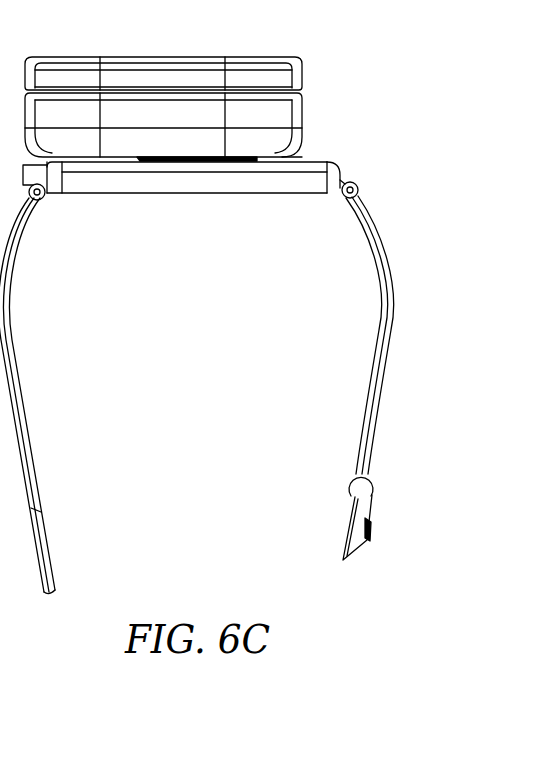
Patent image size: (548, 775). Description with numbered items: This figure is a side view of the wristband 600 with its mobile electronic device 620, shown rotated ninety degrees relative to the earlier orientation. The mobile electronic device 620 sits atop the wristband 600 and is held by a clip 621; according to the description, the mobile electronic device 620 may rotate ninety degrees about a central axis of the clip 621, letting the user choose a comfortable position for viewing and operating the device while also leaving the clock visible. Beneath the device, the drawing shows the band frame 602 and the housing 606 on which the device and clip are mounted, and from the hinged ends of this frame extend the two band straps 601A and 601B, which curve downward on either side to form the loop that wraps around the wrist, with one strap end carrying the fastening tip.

The wristband 600 is at (328, 583).
The first band strap 601A is at (361, 378).
The second band strap 601B is at (40, 405).
The band frame 602 is at (173, 213).
The housing 606 is at (334, 157).
The mobile electronic device 620 is at (99, 37).
The clip 621 is at (303, 157).